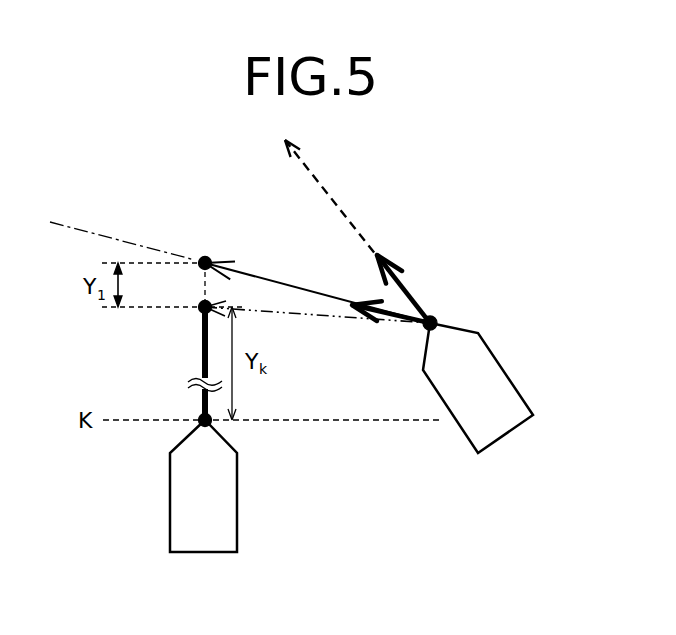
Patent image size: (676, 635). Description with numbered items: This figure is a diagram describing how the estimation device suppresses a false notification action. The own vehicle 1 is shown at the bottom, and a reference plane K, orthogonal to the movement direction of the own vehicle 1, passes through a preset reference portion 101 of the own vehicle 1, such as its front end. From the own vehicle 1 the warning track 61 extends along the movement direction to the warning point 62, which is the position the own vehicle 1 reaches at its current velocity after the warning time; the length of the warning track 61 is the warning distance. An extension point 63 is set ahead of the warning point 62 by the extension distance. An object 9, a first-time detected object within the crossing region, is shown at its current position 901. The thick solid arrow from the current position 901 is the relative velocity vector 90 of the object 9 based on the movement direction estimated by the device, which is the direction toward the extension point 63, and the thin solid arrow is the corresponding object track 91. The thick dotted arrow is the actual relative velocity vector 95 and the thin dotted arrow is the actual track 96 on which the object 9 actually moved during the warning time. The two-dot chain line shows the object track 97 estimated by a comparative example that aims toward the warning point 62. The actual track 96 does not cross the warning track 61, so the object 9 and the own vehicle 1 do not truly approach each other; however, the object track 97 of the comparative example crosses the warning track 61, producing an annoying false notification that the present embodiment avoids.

The own vehicle 1 is at (237, 498).
The object 9 is at (508, 372).
The warning track 61 is at (202, 362).
The warning point 62 is at (199, 310).
The extension point 63 is at (205, 257).
The relative velocity vector 90 is at (384, 304).
The object track 91 is at (277, 279).
The actual relative velocity vector 95 is at (403, 284).
The actual track 96 is at (352, 228).
The object track (comparative example) 97 is at (338, 318).
The reference portion 101 is at (199, 426).
The current position 901 is at (440, 319).